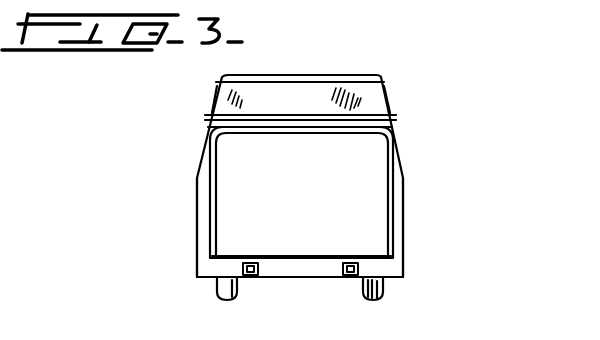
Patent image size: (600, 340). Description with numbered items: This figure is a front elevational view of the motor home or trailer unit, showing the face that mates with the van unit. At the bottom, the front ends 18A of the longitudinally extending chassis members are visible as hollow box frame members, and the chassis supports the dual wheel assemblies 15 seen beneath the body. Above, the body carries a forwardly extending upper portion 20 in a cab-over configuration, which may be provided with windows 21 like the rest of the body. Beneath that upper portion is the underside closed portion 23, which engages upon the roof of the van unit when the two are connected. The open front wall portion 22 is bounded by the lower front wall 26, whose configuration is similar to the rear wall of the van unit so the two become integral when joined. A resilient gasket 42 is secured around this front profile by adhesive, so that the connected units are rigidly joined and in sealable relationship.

The dual wheel assemblies 15 is at (384, 293).
The front ends of chassis members 18A is at (251, 277).
The forwardly extending upper portion 20 is at (304, 74).
The windows 21 is at (357, 90).
The front wall portion 22 is at (238, 168).
The underside closed portion 23 is at (355, 128).
The lower front wall 26 is at (207, 235).
The gasket 42 is at (210, 207).